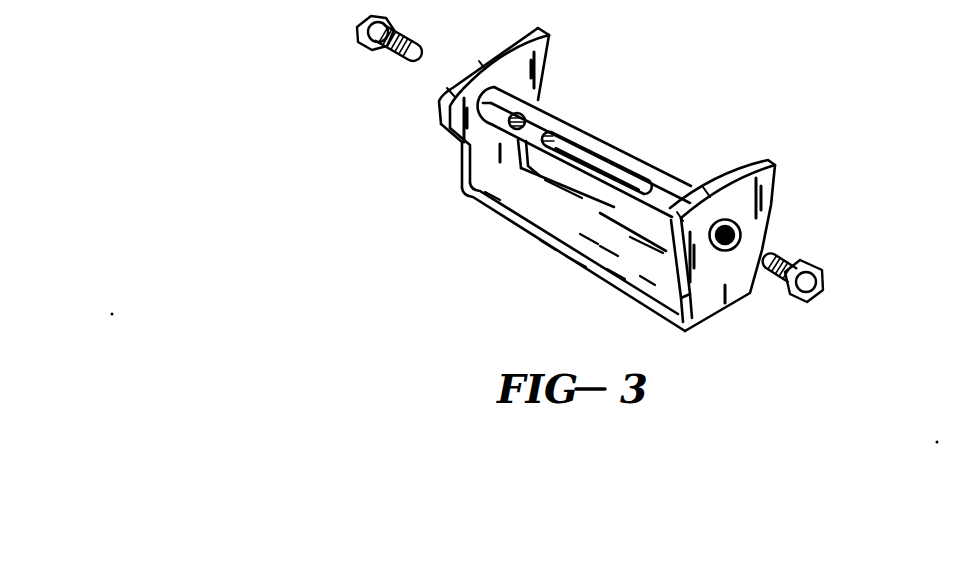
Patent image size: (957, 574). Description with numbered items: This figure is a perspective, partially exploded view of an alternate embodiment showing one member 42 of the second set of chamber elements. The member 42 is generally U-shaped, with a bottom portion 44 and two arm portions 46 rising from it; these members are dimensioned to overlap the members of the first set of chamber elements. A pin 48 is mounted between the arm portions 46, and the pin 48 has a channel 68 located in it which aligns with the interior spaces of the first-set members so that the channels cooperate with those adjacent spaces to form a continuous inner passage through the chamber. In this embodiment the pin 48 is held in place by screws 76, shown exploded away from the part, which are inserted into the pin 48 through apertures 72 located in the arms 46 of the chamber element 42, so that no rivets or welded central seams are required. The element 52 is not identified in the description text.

The member of the second set of chamber elements 42 is at (630, 200).
The bottom portion 44 is at (510, 222).
The arm portions 46 is at (440, 98).
The pin 48 is at (633, 168).
The rail 52 is at (490, 143).
The channel 68 is at (476, 201).
The aperture 72 is at (733, 250).
The screw 76 is at (358, 43).